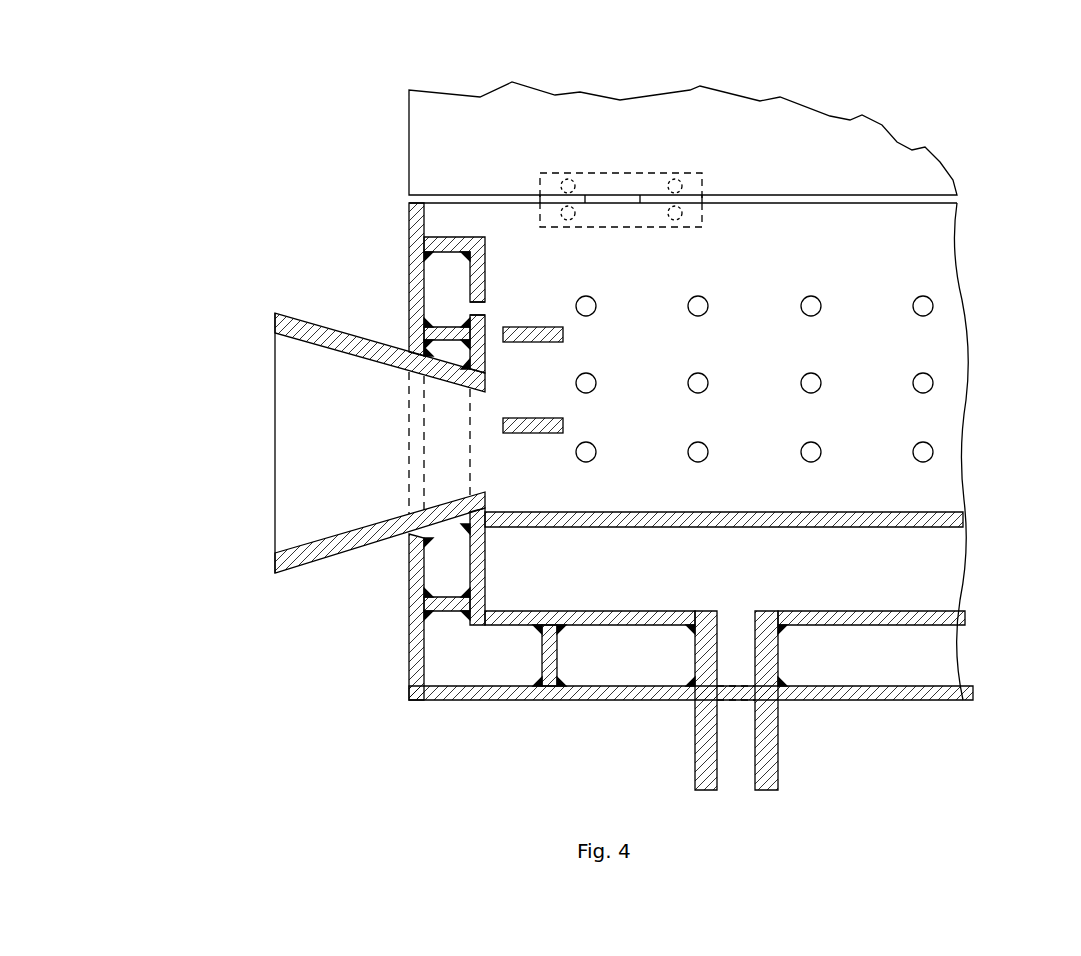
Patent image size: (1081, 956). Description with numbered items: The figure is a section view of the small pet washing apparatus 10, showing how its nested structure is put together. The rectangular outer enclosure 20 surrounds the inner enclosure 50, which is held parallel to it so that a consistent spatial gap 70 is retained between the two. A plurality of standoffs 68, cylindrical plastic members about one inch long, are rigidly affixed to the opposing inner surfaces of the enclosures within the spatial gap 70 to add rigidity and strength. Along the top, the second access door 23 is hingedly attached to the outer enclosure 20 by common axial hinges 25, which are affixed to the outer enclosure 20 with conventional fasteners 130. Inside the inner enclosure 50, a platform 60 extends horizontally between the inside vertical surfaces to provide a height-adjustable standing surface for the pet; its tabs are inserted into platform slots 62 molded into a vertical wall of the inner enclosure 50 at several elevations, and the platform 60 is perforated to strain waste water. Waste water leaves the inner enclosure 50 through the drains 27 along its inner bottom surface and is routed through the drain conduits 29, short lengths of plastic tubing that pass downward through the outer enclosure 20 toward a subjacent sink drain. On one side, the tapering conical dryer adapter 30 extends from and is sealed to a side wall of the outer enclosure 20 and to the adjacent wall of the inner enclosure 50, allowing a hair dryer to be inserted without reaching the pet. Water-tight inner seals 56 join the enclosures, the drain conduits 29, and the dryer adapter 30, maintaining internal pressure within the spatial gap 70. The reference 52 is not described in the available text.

The small pet washing apparatus 10 is at (172, 176).
The outer enclosure 20 is at (897, 700).
The second access door 23 is at (440, 155).
The common axial hinges 25 is at (614, 172).
The drains 27 is at (734, 626).
The drain conduits 29 is at (777, 720).
The dryer adapter 30 is at (298, 548).
The inner enclosure 50 is at (922, 546).
The holes 52 is at (478, 308).
The inner seals 56 is at (428, 257).
The platform 60 is at (915, 515).
The platform slots 62 is at (563, 423).
The standoffs 68 is at (462, 335).
The spatial gap 70 is at (454, 656).
The fasteners 130 is at (570, 217).